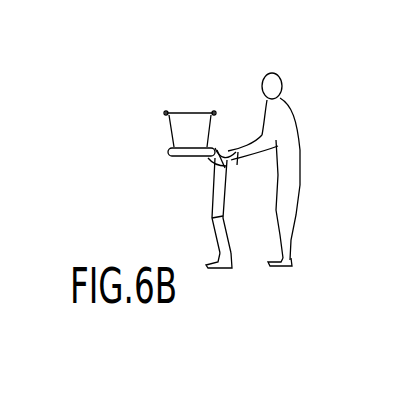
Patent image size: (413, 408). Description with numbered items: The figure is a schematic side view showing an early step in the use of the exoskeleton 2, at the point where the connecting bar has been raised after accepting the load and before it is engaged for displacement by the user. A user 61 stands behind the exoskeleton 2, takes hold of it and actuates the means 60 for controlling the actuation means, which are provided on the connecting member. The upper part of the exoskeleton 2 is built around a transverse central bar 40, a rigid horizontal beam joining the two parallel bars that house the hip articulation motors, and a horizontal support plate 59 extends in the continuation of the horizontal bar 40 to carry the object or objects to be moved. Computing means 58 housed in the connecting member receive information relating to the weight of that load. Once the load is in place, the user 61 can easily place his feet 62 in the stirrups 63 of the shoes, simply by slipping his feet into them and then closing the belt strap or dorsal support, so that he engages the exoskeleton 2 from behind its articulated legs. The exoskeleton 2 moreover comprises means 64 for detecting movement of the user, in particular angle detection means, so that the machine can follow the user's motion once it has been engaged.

The exoskeleton 2 is at (200, 203).
The transverse central bar 40 is at (224, 147).
The computing means 58 is at (203, 172).
The horizontal support plate 59 is at (168, 152).
The means for controlling the actuation means 60 is at (230, 170).
The user 61 is at (289, 136).
The feet 62 is at (287, 268).
The stirrups 63 is at (222, 270).
The means for detecting movement of the user 64 is at (236, 176).